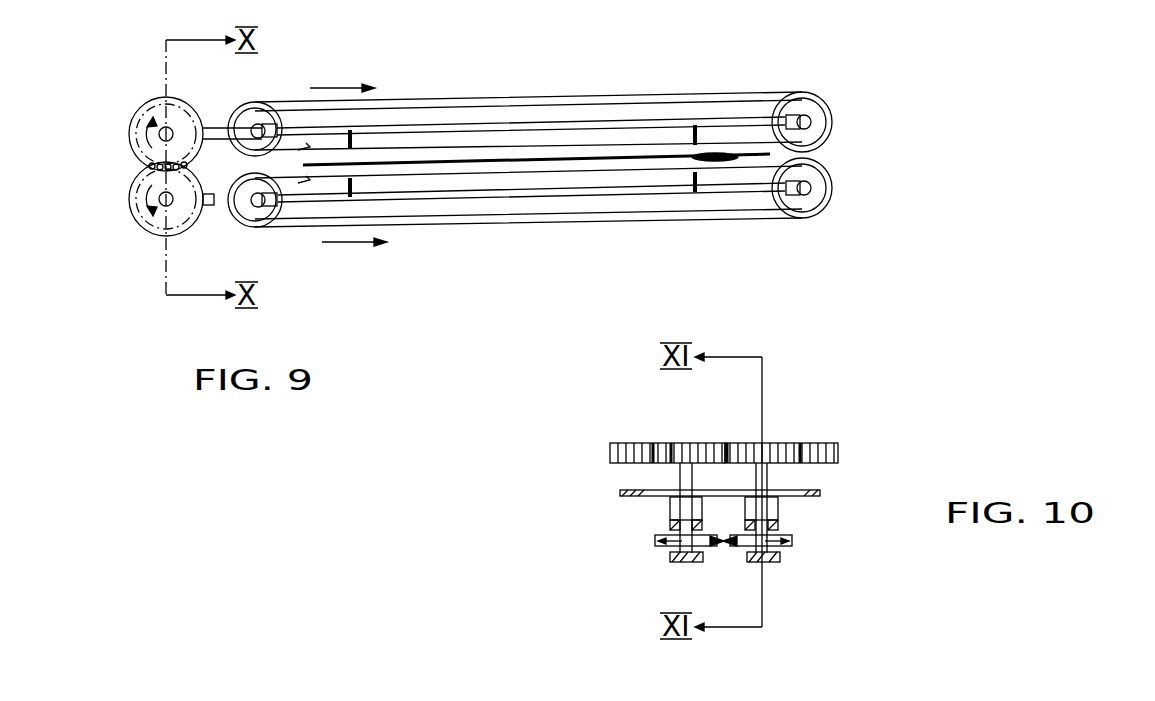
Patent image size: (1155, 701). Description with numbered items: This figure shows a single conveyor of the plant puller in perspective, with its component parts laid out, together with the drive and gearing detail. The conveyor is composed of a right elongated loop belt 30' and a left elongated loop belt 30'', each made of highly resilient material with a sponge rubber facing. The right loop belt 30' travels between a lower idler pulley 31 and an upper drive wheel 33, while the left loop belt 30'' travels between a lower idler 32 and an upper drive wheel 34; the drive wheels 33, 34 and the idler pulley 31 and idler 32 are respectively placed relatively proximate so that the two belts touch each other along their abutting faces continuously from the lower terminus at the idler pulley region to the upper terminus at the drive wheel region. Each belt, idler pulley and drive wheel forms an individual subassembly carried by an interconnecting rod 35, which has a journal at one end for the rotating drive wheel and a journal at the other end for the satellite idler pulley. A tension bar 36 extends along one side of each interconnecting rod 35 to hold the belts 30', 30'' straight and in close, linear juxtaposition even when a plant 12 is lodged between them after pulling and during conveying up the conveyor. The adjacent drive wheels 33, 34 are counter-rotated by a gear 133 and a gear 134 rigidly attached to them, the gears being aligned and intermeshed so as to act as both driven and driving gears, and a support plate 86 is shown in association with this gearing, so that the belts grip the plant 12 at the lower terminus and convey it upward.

In FIG. 9, the plant 12 is at (720, 157).
In FIG. 9, the right elongated loop belt 30' is at (528, 247).
In FIG. 10, the right elongated loop belt 30' is at (744, 571).
In FIG. 9, the left elongated loop belt 30'' is at (528, 76).
In FIG. 10, the left elongated loop belt 30'' is at (697, 569).
In FIG. 9, the lower idler pulley 31 is at (808, 110).
In FIG. 9, the lower idler 32 is at (815, 200).
In FIG. 9, the upper drive wheel 33 is at (262, 113).
In FIG. 10, the upper drive wheel 33 is at (658, 541).
In FIG. 9, the upper drive wheel 34 is at (265, 212).
In FIG. 10, the upper drive wheel 34 is at (792, 541).
In FIG. 9, the interconnecting rod 35 is at (517, 127).
In FIG. 10, the interconnecting rod 35 is at (670, 557).
In FIG. 9, the tension bar 36 is at (423, 150).
In FIG. 10, the support plate 86 is at (680, 479).
In FIG. 9, the gear 133 is at (131, 122).
In FIG. 10, the gear 133 is at (690, 447).
In FIG. 9, the gear 134 is at (132, 208).
In FIG. 10, the gear 134 is at (770, 450).